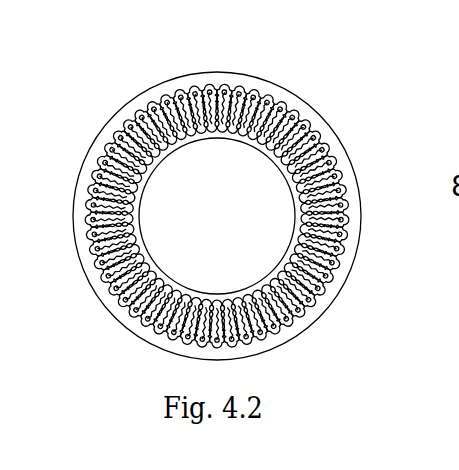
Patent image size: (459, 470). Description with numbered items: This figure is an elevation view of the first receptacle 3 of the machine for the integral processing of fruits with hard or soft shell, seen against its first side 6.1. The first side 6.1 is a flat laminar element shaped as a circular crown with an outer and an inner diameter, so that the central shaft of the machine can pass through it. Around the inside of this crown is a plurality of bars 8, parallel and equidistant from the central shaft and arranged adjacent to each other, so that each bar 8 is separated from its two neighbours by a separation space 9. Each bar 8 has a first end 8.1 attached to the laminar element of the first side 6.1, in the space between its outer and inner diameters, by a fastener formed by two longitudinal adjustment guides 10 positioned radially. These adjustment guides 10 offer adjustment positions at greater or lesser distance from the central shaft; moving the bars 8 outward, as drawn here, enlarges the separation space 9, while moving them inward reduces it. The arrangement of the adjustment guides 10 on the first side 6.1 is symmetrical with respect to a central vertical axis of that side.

The first receptacle 3 is at (70, 98).
The first side 6.1 is at (315, 122).
The separation space 9 is at (178, 90).
The longitudinal adjustment guides 10 is at (333, 180).
The bars 8 is at (333, 277).
The first end 8.1 is at (97, 258).